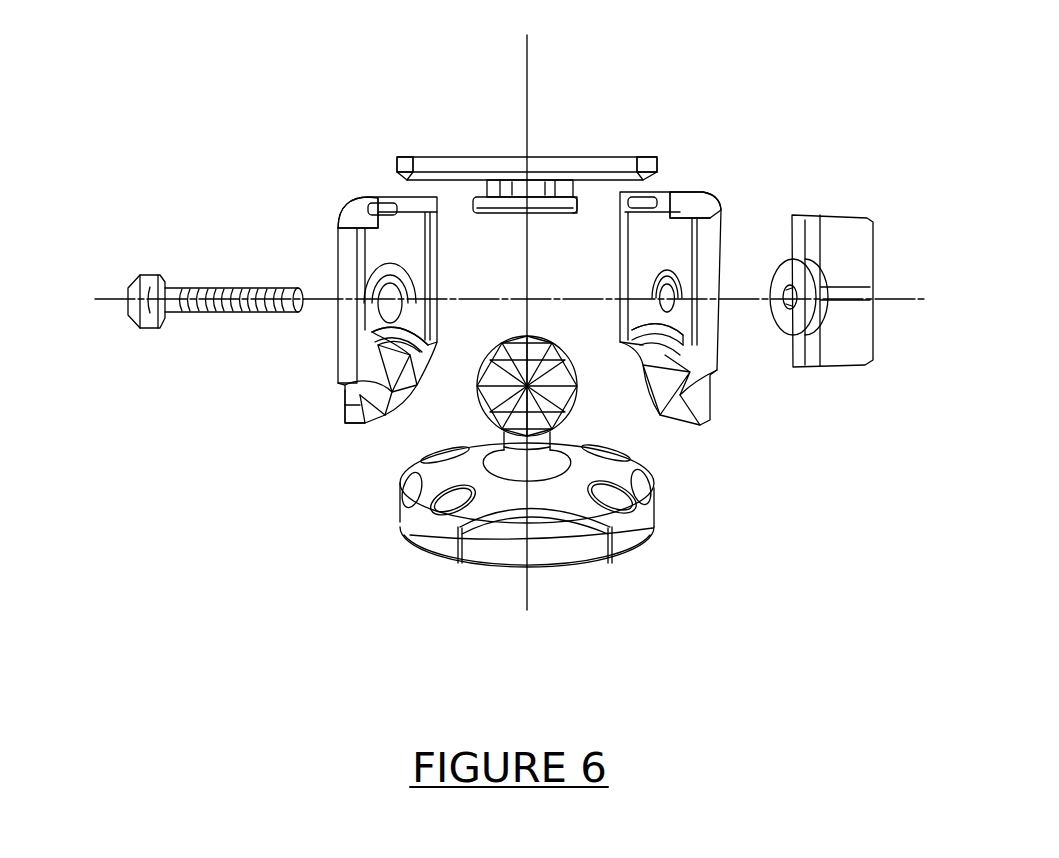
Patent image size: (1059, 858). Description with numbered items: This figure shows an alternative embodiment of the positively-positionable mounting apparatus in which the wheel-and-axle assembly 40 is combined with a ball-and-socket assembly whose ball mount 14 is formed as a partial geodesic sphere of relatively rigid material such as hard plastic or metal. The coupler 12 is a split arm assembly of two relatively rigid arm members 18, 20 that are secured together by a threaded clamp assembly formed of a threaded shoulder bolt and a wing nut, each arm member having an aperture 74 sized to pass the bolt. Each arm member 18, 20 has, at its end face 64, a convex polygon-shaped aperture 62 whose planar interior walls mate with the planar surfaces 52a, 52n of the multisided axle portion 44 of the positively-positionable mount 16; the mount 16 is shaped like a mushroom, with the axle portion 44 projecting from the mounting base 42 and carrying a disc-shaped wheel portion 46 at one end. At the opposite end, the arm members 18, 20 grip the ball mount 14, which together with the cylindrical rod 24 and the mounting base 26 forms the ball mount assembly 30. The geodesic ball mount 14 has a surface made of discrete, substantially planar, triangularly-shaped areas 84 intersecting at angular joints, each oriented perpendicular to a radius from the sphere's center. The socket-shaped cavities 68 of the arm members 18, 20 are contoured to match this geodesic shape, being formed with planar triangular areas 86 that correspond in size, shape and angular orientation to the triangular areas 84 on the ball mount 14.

The coupler 12 is at (324, 396).
The ball mount 14 is at (467, 413).
The positively-positionable mount 16 is at (489, 217).
The arm member 18 is at (340, 196).
The arm member 20 is at (721, 202).
The rod 24 is at (563, 444).
The mounting base 26 is at (665, 518).
The ball mount assembly 30 is at (440, 580).
The wheel-and-axle assembly 40 is at (609, 114).
The mounting base 42 is at (391, 156).
The axle portion 44 is at (575, 190).
The wheel portion 46 is at (586, 203).
The planar surface 52n is at (512, 189).
The planar surface 52a is at (545, 189).
The shaped aperture 62 is at (381, 193).
The end face 64 is at (369, 190).
The socket-shaped cavity 68 is at (382, 414).
The aperture 74 is at (384, 303).
The triangular area 84 is at (506, 344).
The triangular area 86 is at (410, 370).